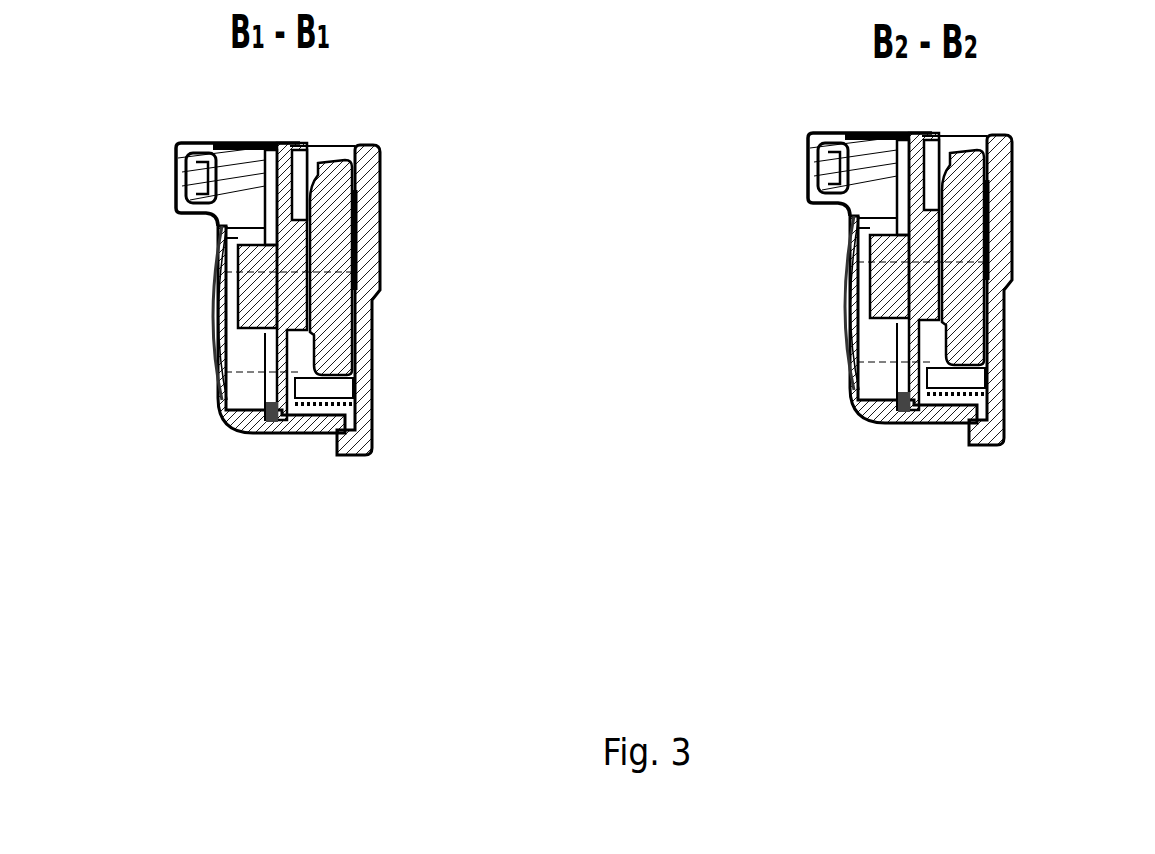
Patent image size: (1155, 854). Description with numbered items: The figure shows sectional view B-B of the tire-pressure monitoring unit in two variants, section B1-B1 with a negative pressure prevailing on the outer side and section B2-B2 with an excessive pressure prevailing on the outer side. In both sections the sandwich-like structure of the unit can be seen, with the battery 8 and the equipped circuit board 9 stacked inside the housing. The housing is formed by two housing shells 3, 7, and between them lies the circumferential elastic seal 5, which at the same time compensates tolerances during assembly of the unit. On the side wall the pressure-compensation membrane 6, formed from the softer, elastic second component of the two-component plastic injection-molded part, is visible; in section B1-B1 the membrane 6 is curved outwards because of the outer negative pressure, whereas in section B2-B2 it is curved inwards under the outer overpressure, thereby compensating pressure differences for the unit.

The housing shell 3 is at (243, 415).
The circumferential elastic seal 5 is at (277, 423).
The pressure-compensation membrane 6 is at (218, 337).
The housing shell 7 is at (370, 383).
The battery 8 is at (332, 318).
The equipped circuit board 9 is at (302, 237).